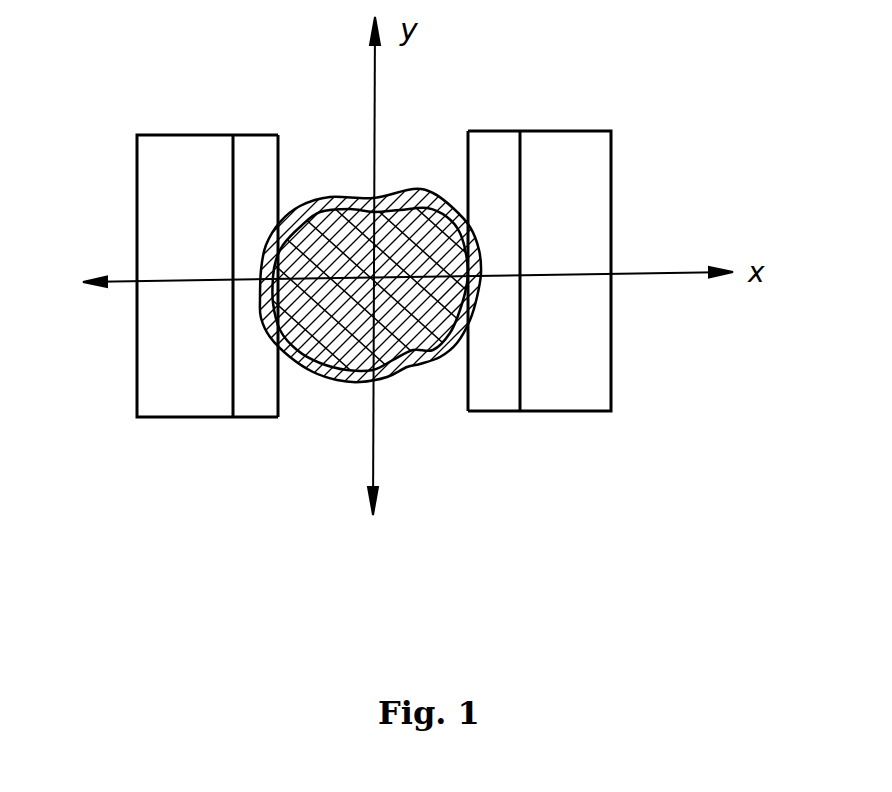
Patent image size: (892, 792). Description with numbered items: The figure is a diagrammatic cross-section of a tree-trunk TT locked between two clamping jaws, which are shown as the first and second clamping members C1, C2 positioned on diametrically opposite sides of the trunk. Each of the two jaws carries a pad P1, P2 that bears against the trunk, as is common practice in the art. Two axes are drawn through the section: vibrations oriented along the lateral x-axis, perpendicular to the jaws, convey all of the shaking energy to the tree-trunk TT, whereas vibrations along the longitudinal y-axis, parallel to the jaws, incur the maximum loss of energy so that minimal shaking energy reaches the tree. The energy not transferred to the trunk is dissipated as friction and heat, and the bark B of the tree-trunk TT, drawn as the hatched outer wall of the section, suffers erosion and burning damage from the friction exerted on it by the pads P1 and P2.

The first clamping jaw C1 is at (137, 417).
The second clamping jaw C2 is at (611, 411).
The pad P1 is at (265, 405).
The pad P2 is at (490, 398).
The tree-trunk TT is at (331, 148).
The bark B is at (416, 364).